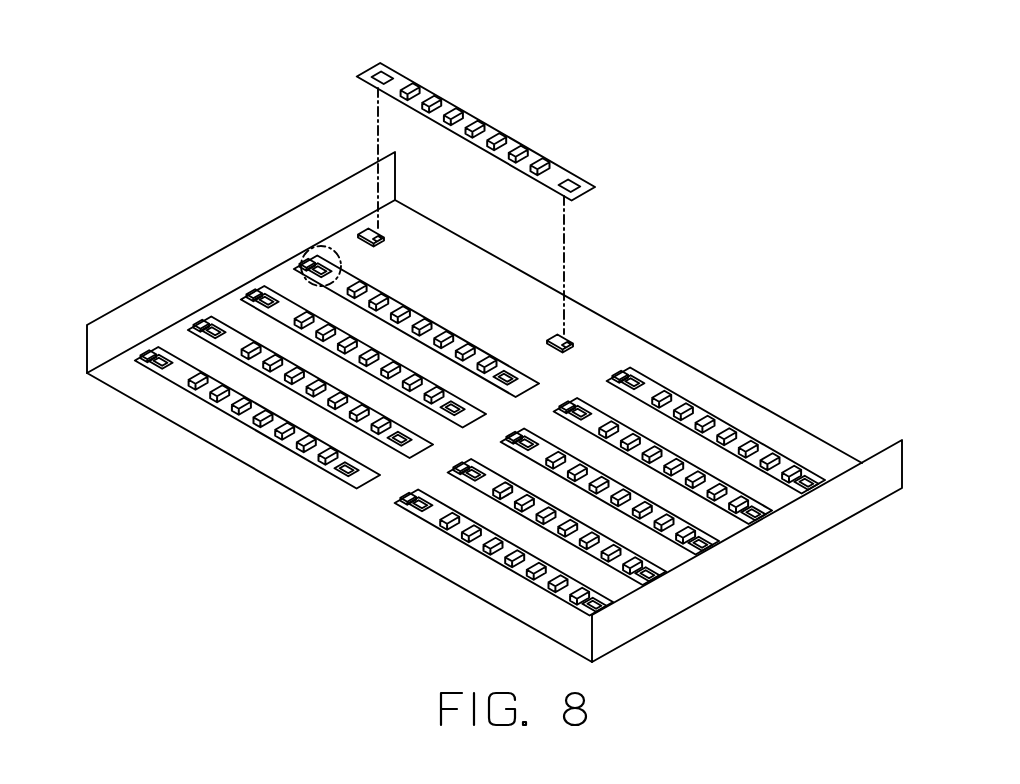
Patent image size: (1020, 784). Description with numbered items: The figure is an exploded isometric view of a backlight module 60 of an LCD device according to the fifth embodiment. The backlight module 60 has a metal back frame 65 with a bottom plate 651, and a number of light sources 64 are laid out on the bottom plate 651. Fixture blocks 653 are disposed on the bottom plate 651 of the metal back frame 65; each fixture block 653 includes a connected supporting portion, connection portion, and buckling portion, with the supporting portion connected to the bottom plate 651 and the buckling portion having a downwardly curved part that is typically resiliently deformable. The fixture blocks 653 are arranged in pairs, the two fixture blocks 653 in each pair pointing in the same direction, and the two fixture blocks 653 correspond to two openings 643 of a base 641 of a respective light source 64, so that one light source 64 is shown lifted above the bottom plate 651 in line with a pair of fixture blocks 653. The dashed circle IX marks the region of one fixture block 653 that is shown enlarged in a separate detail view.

The backlight module 60 is at (494, 357).
The light source 64 is at (513, 193).
The base 641 is at (513, 140).
The openings 643 is at (582, 178).
The metal back frame 65 is at (494, 407).
The bottom plate 651 is at (680, 377).
The fixture blocks 653 is at (574, 340).
The detail view circle IX is at (310, 249).